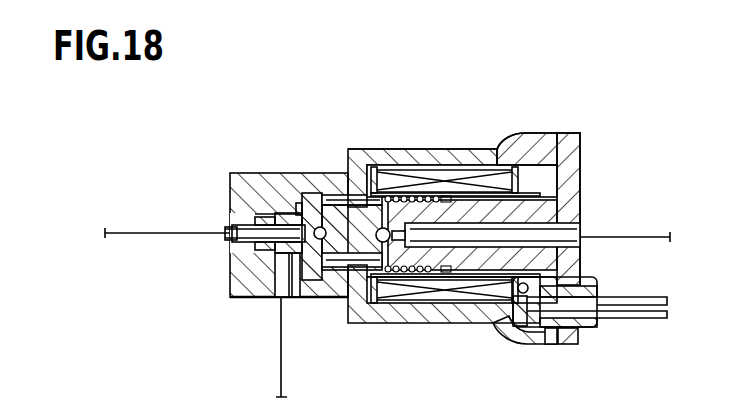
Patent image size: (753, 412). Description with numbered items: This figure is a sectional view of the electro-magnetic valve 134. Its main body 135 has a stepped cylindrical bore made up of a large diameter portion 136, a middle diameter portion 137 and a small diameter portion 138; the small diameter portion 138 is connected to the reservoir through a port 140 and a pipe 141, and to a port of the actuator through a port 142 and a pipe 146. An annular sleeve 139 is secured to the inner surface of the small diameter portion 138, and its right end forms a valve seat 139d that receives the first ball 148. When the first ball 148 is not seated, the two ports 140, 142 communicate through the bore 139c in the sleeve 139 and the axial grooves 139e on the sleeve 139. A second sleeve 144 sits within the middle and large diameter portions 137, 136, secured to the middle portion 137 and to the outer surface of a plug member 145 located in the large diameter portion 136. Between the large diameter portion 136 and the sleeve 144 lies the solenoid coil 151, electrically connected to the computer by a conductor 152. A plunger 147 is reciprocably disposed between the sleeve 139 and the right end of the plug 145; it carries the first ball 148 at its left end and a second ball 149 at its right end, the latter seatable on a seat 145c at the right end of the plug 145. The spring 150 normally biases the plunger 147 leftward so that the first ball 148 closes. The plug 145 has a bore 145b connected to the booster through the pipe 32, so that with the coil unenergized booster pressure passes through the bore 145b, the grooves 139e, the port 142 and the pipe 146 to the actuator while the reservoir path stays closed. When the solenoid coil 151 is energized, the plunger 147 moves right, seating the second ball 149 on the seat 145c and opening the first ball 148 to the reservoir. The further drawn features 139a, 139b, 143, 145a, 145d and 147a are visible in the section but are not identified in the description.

The pipe 32 is at (656, 237).
The electro-magnetic valve 134 is at (640, 82).
The main body 135 is at (240, 188).
The large diameter portion 136 is at (488, 163).
The middle diameter portion 137 is at (356, 195).
The small diameter portion 138 is at (277, 214).
The annular sleeve 139 is at (293, 212).
The nipple flange 139a is at (272, 217).
The nipple shoulder 139b is at (300, 203).
The bore 139c is at (240, 239).
The valve seat 139d is at (318, 196).
The axial grooves 139e is at (305, 298).
The port 140 is at (240, 228).
The pipe 141 is at (152, 233).
The port 142 is at (277, 300).
The passage 143 is at (285, 297).
The sleeve 144 is at (426, 166).
The plug member 145 is at (576, 178).
The piston elbow 145a is at (497, 270).
The bore 145b is at (576, 242).
The seat 145c is at (406, 290).
The piston flange 145d is at (582, 344).
The pipe 146 is at (281, 391).
The plunger 147 is at (365, 170).
The housing lower wall 147a is at (355, 323).
The first ball 148 is at (312, 297).
The second ball 149 is at (371, 300).
The spring 150 is at (400, 188).
The solenoid coil 151 is at (460, 298).
The conductor 152 is at (650, 298).